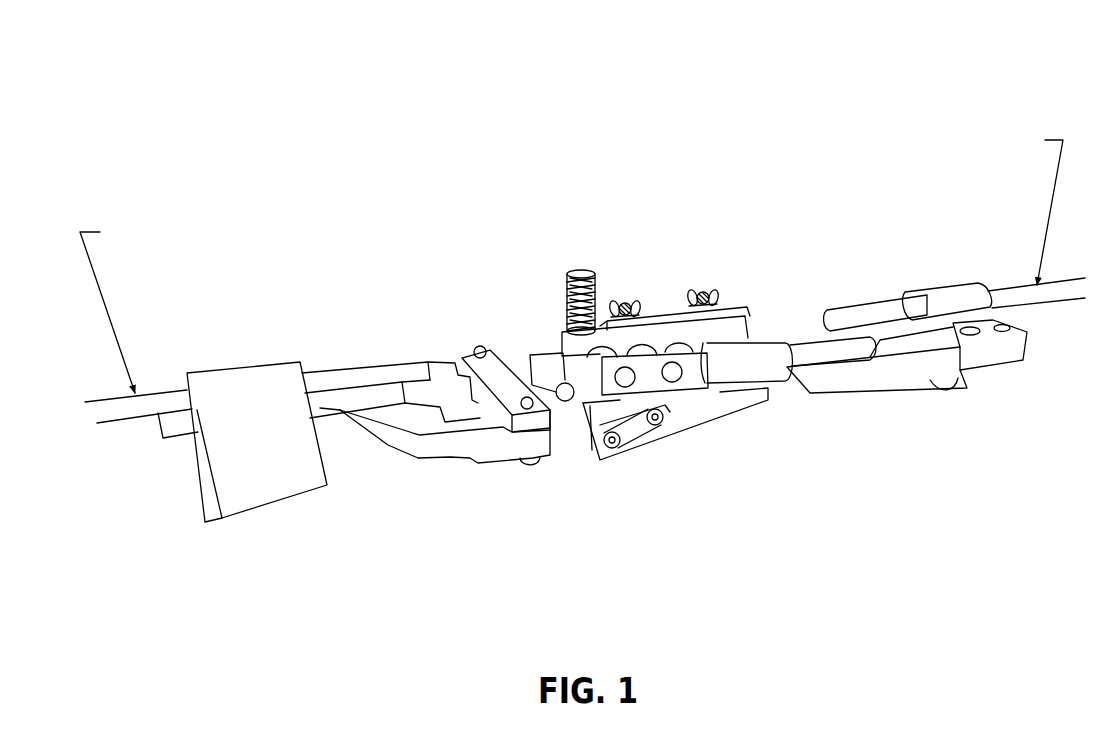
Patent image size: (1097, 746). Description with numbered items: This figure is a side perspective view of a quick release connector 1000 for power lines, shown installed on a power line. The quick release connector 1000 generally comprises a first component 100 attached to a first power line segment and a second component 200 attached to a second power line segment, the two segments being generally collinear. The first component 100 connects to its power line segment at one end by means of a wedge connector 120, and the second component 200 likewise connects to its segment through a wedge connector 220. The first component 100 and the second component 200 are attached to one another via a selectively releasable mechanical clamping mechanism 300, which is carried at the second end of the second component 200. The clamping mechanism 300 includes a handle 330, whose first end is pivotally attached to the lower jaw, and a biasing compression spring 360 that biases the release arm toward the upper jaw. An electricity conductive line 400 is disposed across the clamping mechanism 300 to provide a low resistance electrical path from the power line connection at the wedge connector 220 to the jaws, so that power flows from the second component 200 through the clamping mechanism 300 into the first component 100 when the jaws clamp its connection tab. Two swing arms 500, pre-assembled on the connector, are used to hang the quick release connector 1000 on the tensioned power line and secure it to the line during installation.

The quick release connector 1000 is at (632, 152).
The first component 100 is at (545, 475).
The wedge connector 120 is at (273, 362).
The second component 200 is at (598, 522).
The wedge connector 220 is at (935, 283).
The clamping mechanism 300 is at (768, 417).
The handle 330 is at (733, 410).
The biasing compression spring 360 is at (564, 276).
The electricity conductive line 400 is at (807, 332).
The swing arms 500 is at (657, 302).